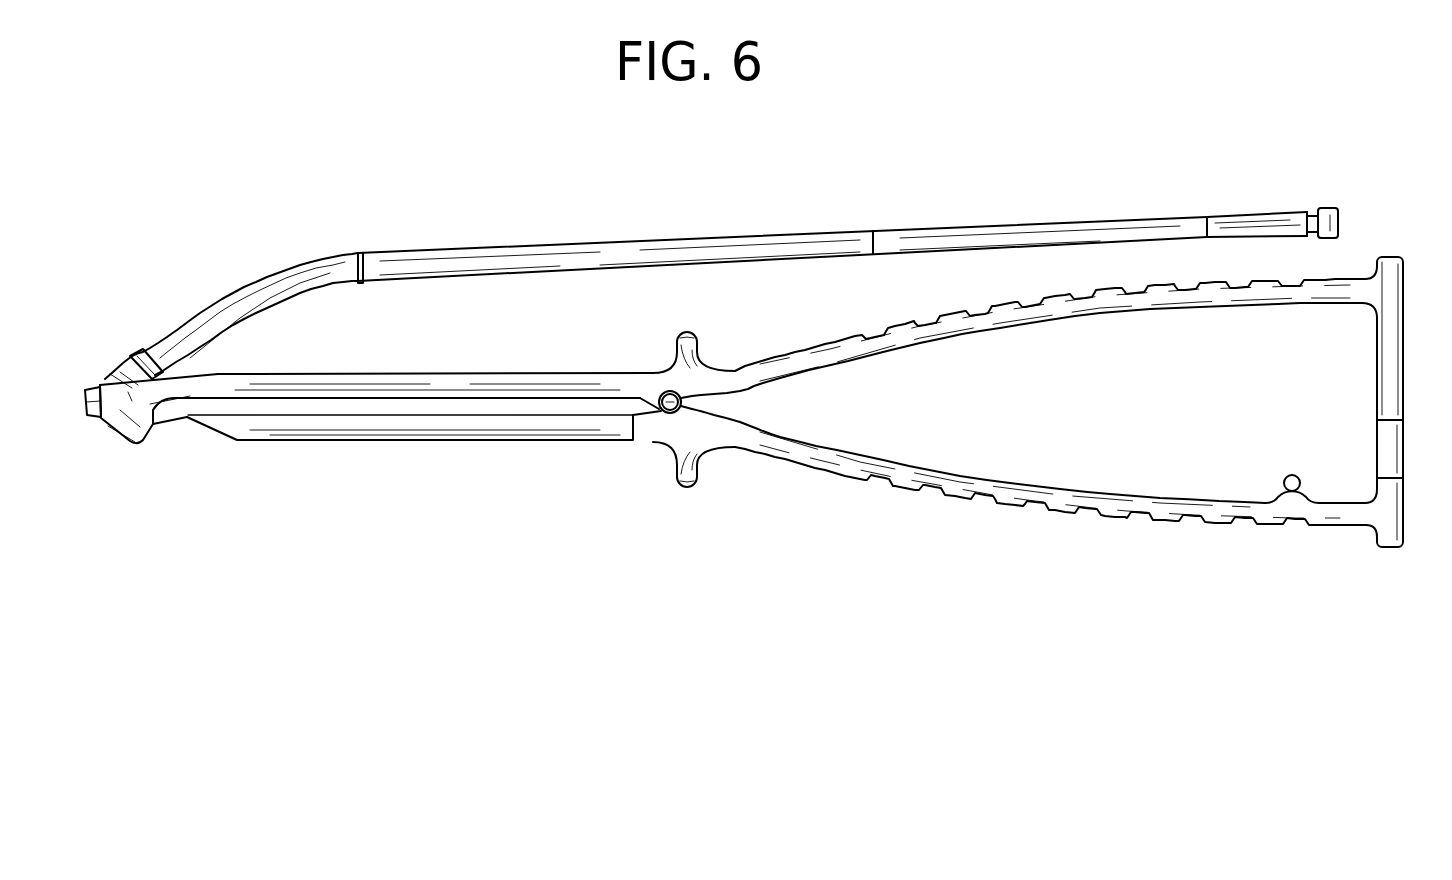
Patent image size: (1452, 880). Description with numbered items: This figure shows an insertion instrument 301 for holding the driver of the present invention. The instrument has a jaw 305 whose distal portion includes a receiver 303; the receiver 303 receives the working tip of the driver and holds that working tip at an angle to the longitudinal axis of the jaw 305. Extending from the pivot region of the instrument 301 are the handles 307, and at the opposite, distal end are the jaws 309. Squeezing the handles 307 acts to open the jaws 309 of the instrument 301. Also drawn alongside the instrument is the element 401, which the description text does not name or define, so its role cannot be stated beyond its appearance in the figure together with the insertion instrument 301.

The insertion instrument 301 is at (768, 447).
The receiver 303 is at (114, 367).
The jaw 305 is at (117, 438).
The handles 307 is at (1395, 332).
The jaws 309 is at (451, 385).
The guide rod 401 is at (262, 240).